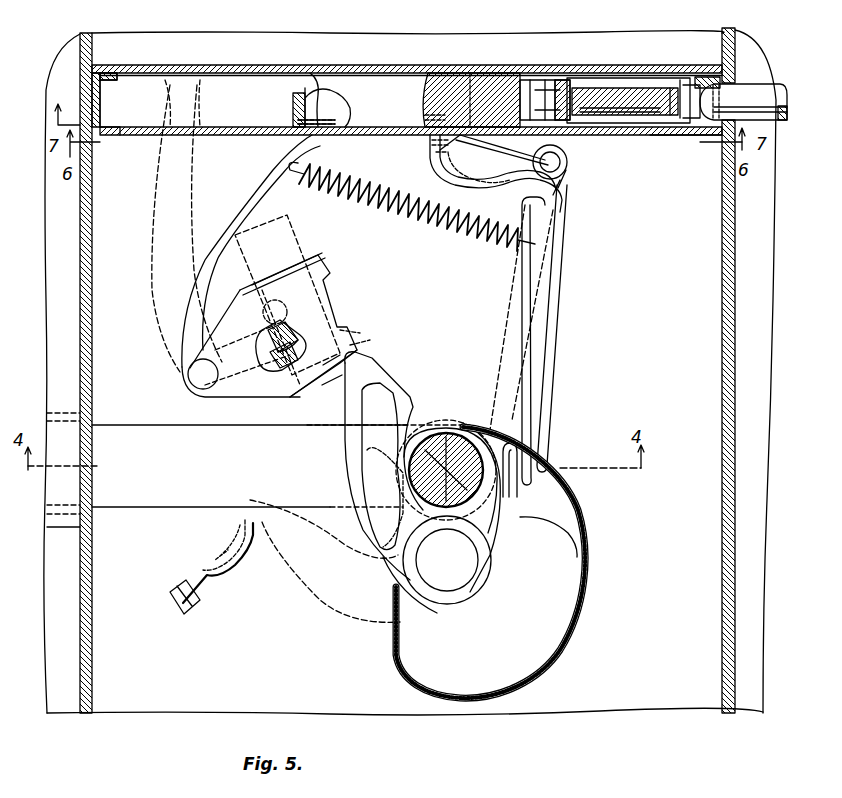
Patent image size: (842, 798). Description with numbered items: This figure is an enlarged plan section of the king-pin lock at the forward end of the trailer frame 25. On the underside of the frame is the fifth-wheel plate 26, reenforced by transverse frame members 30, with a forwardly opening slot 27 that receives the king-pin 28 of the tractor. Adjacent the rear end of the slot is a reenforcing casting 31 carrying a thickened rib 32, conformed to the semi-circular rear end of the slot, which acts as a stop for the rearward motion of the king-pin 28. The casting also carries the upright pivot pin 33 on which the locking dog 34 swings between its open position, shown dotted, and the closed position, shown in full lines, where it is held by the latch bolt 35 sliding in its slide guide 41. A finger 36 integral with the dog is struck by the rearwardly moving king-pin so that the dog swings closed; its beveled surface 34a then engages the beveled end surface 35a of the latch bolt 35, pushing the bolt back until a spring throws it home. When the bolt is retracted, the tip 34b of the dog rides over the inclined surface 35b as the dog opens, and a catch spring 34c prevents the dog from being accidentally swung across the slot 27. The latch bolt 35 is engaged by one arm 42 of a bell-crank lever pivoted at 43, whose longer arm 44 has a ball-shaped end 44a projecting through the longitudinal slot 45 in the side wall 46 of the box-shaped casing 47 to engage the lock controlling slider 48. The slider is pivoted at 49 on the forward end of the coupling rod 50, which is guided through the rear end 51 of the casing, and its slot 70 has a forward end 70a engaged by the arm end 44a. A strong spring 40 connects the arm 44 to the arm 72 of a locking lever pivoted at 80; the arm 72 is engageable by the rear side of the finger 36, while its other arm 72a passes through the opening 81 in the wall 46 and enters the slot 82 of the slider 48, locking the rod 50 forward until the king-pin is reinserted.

The trailer frame 25 is at (138, 713).
The plate 26 is at (410, 372).
The slot 27 is at (180, 507).
The king-pin 28 is at (447, 442).
The transverse frame members 30 is at (88, 345).
The reenforcing plate or casting 31 is at (560, 537).
The rib or flange 32 is at (478, 406).
The pivot pin 33 is at (447, 560).
The locking dog 34 is at (350, 456).
The beveled surface 34a is at (397, 389).
The tip 34b is at (360, 369).
The catch spring 34c is at (210, 569).
The latch bolt 35 is at (300, 237).
The beveled end surface 35a is at (300, 411).
The inclined surface 35b is at (355, 339).
The finger 36 is at (390, 447).
The spring 40 is at (378, 213).
The slide guide 41 is at (326, 303).
The arm 42 is at (250, 399).
The pivot 43 is at (195, 379).
The arm 44 is at (243, 201).
The ball-shaped end 44a is at (168, 95).
The longitudinal slot 45 is at (115, 135).
The side wall 46 is at (218, 125).
The box-shaped casing 47 is at (518, 70).
The lock controlling slider 48 is at (470, 73).
The pivot 49 is at (578, 73).
The coupling rod 50 is at (768, 88).
The rear end 51 is at (718, 70).
The longitudinal slot 70 is at (520, 78).
The forward end 70a is at (332, 52).
The arm 72 is at (548, 310).
The locking arm 72a is at (430, 151).
The pivot 80 is at (560, 166).
The opening 81 is at (460, 137).
The slot 82 is at (652, 136).